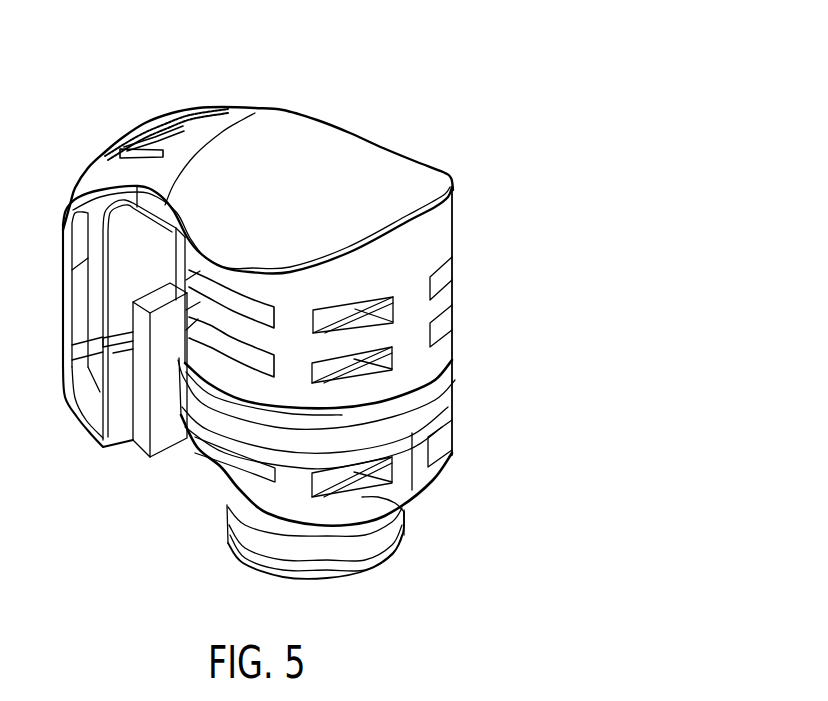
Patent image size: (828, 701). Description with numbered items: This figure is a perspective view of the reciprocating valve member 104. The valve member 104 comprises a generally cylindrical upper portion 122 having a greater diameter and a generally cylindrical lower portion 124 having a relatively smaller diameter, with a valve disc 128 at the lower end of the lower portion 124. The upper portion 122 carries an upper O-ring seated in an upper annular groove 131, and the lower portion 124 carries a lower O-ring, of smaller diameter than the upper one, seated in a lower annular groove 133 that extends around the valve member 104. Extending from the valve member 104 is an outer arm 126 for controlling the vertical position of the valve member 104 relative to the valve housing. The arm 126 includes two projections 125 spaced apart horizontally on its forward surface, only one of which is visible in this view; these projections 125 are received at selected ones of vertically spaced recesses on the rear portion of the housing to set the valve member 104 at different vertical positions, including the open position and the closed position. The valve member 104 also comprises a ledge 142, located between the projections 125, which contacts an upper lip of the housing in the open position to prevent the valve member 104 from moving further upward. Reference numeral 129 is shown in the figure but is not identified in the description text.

The valve member 104 is at (403, 99).
The upper portion 122 is at (440, 227).
The outer arm 126 is at (105, 174).
The ledge 142 is at (157, 293).
The projecting element 125 is at (123, 352).
The upper annular groove 131 is at (232, 400).
The lower annular groove 133 is at (402, 514).
The lower portion 124 is at (252, 512).
The flange ring 129 is at (392, 553).
The valve disc 128 is at (320, 581).